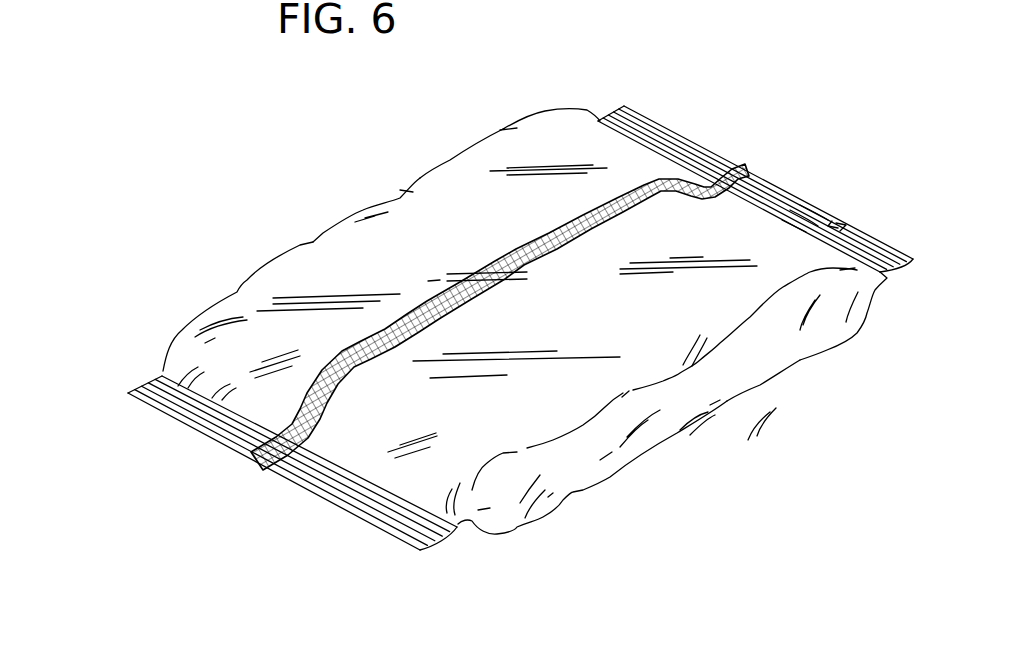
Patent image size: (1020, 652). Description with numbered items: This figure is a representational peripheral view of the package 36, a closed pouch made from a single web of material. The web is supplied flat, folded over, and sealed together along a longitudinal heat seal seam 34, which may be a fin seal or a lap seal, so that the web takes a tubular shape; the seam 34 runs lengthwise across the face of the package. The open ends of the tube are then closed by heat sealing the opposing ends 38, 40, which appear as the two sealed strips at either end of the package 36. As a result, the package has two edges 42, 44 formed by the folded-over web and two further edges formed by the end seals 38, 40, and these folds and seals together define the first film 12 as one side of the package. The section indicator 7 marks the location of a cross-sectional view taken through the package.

The first film 12 is at (543, 140).
The longitudinal heat seal seam 34 is at (583, 223).
The package 36 is at (372, 183).
The end seal 38 is at (790, 200).
The end seal 40 is at (320, 482).
The edge 42 is at (427, 170).
The edge 44 is at (763, 390).
The section line 7- 7 is at (337, 215).